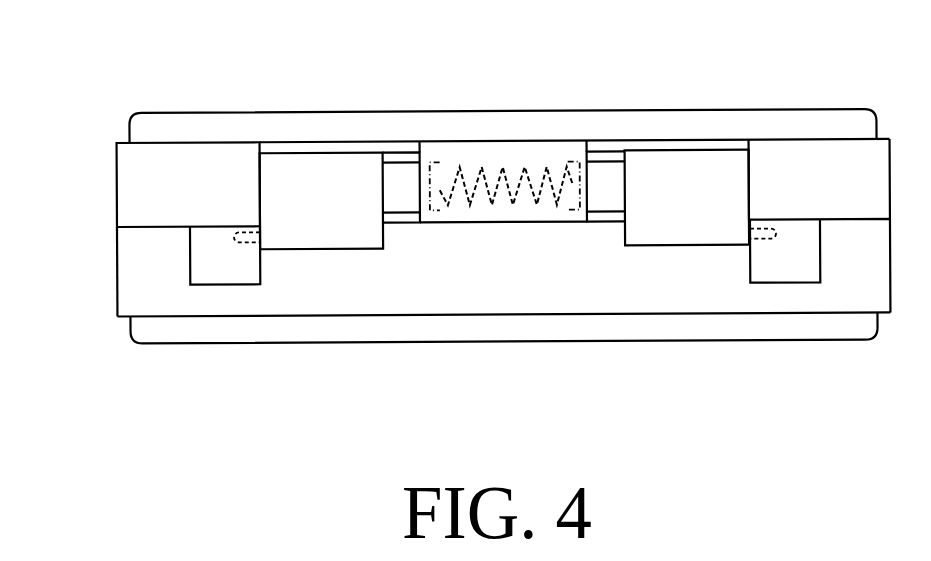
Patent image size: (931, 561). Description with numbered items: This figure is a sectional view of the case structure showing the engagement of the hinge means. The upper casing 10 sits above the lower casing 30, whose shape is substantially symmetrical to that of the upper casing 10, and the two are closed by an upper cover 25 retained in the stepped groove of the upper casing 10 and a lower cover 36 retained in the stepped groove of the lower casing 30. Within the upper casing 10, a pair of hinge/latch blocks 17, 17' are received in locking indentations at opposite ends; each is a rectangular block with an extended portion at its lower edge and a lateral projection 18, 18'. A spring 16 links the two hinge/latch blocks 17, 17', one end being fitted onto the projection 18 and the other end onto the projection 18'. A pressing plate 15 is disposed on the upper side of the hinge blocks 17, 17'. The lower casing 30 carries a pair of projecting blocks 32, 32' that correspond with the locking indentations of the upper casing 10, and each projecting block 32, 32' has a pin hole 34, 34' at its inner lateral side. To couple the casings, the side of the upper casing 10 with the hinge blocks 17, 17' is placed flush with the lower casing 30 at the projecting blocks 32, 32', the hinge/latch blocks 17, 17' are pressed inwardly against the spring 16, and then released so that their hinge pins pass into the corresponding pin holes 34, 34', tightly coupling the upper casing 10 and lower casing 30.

The upper casing 10 is at (135, 181).
The pressing plate 15 is at (726, 141).
The spring 16 is at (505, 165).
The hinge/latch block 17 is at (321, 140).
The hinge/latch block 17' is at (686, 133).
The projection 18 is at (399, 126).
The projection 18' is at (605, 121).
The upper cover 25 is at (201, 111).
The lower casing 30 is at (135, 274).
The projecting block 32 is at (225, 317).
The projecting block 32' is at (791, 313).
The pin hole 34 is at (260, 320).
The pin hole 34' is at (764, 318).
The lower cover 36 is at (523, 332).